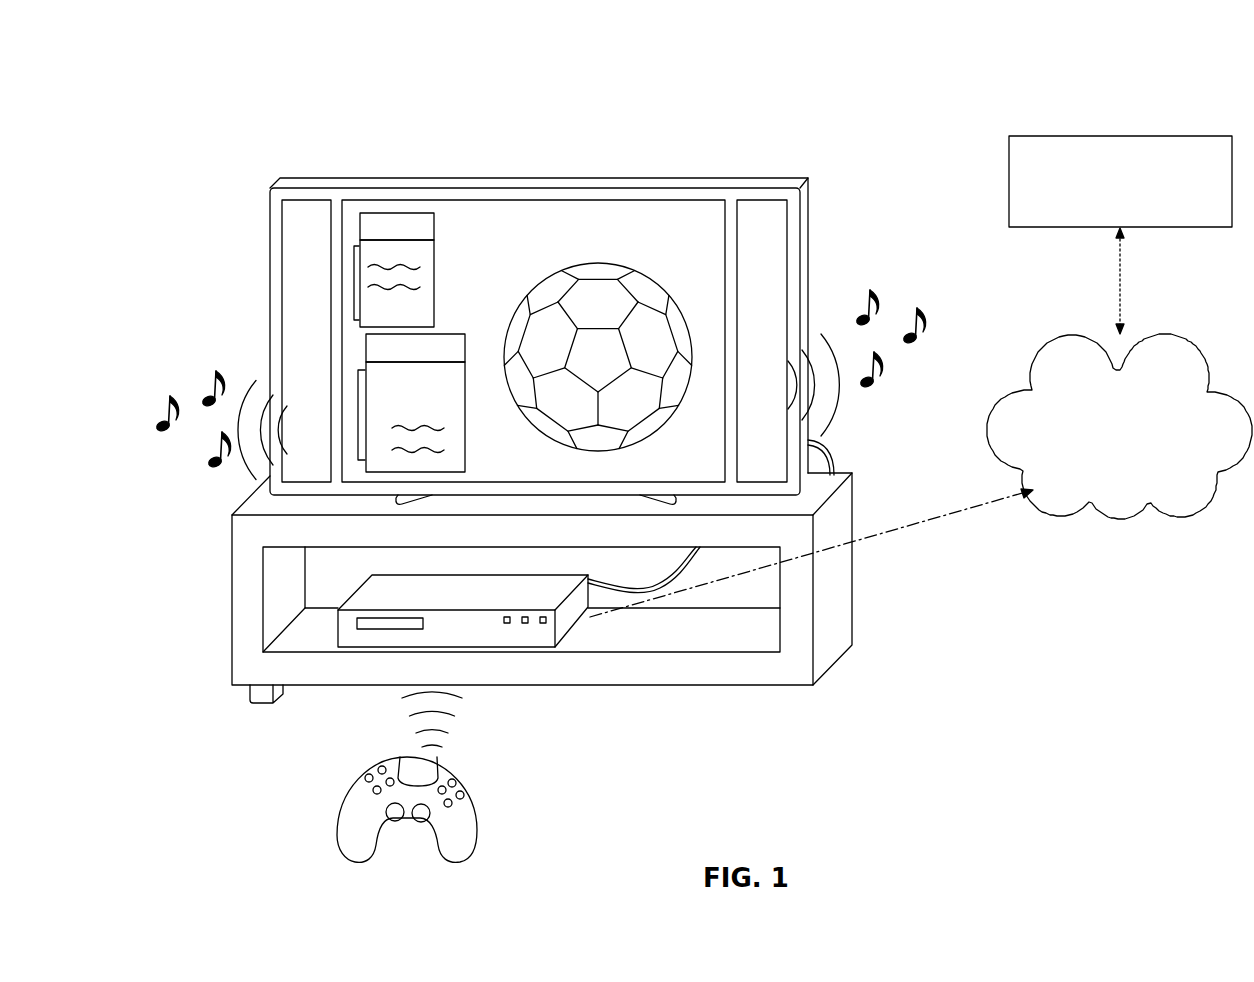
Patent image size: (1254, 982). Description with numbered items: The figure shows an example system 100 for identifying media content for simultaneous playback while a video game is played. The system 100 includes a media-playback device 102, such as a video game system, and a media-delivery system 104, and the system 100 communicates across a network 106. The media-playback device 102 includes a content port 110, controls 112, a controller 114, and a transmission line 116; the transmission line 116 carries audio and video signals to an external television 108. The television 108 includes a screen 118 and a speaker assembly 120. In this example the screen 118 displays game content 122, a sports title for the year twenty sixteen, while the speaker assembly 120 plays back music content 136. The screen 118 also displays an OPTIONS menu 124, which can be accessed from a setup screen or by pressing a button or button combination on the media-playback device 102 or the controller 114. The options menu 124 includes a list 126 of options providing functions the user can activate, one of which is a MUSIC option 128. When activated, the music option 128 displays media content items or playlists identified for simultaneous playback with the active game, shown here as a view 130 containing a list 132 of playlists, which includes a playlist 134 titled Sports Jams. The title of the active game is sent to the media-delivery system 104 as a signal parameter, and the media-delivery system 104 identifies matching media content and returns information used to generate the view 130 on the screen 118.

The system 100 is at (203, 119).
The media-playback device 102 is at (343, 617).
The media-delivery system 104 is at (1178, 140).
The network 106 is at (1166, 345).
The television 108 is at (757, 178).
The content port 110 is at (387, 624).
The controls 112 is at (499, 620).
The controller 114 is at (477, 808).
The transmission line 116 is at (656, 598).
The screen 118 is at (587, 200).
The speaker assembly 120 is at (312, 218).
The game content 122 is at (699, 347).
The options menu 124 is at (400, 212).
The list of options 126 is at (354, 284).
The music option 128 is at (432, 308).
The view 130 is at (367, 348).
The list of playlists 132 is at (357, 417).
The playlist 134 is at (457, 377).
The music content 136 is at (164, 384).